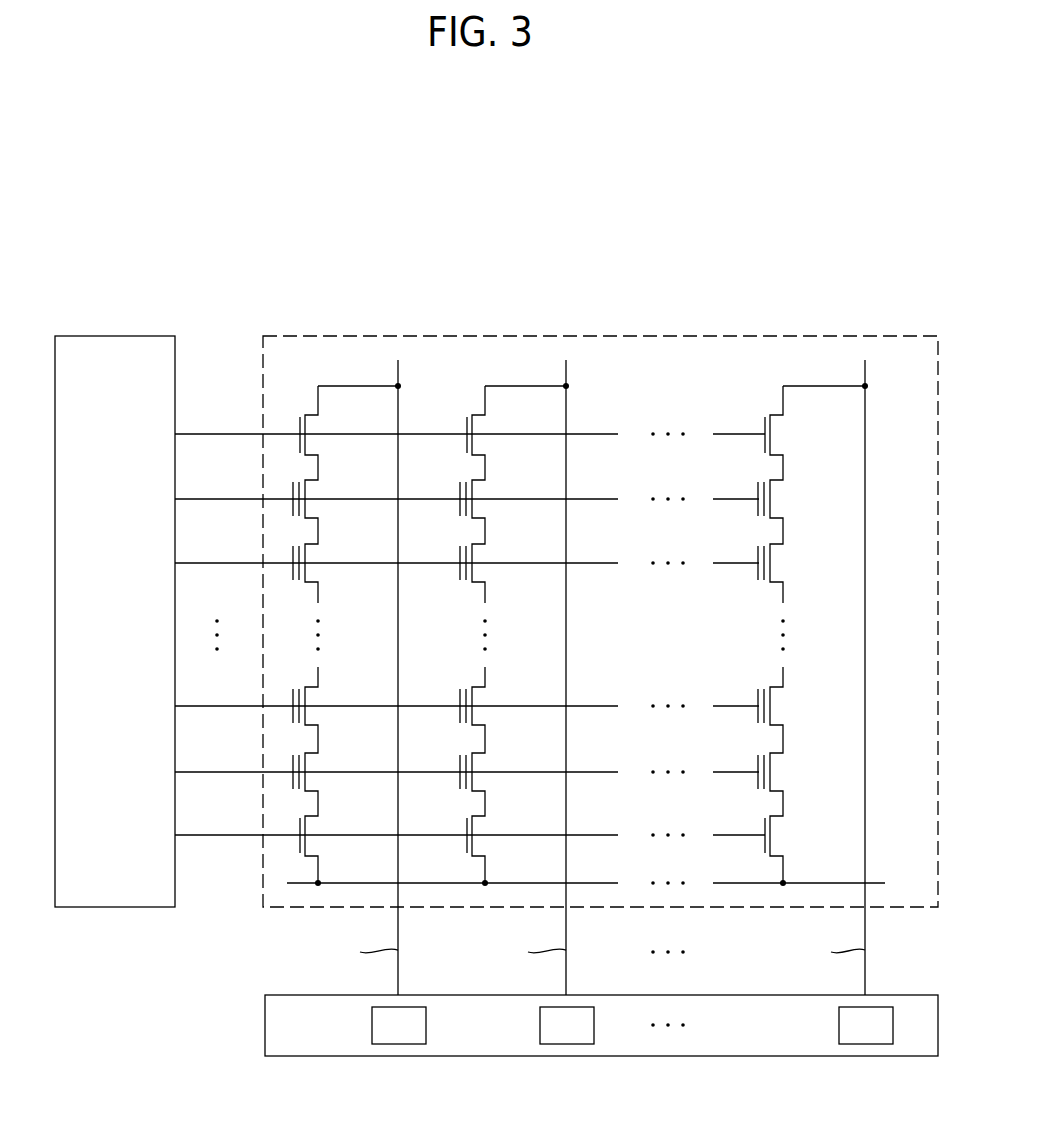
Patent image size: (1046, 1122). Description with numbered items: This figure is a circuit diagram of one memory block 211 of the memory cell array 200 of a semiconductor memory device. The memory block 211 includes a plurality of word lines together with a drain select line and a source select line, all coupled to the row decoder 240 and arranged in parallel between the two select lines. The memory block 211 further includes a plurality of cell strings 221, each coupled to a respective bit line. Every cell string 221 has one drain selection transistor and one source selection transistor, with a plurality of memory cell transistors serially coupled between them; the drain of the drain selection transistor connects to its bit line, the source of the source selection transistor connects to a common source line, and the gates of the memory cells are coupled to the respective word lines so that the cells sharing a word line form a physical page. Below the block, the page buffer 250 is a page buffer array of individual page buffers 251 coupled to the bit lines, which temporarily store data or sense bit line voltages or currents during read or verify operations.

The memory cell array 200 is at (913, 238).
The row decoder 240 is at (116, 336).
The memory block 211 is at (827, 336).
The cell string 221 is at (304, 383).
The page buffer 250 is at (265, 1025).
The page buffer 251 is at (372, 1025).